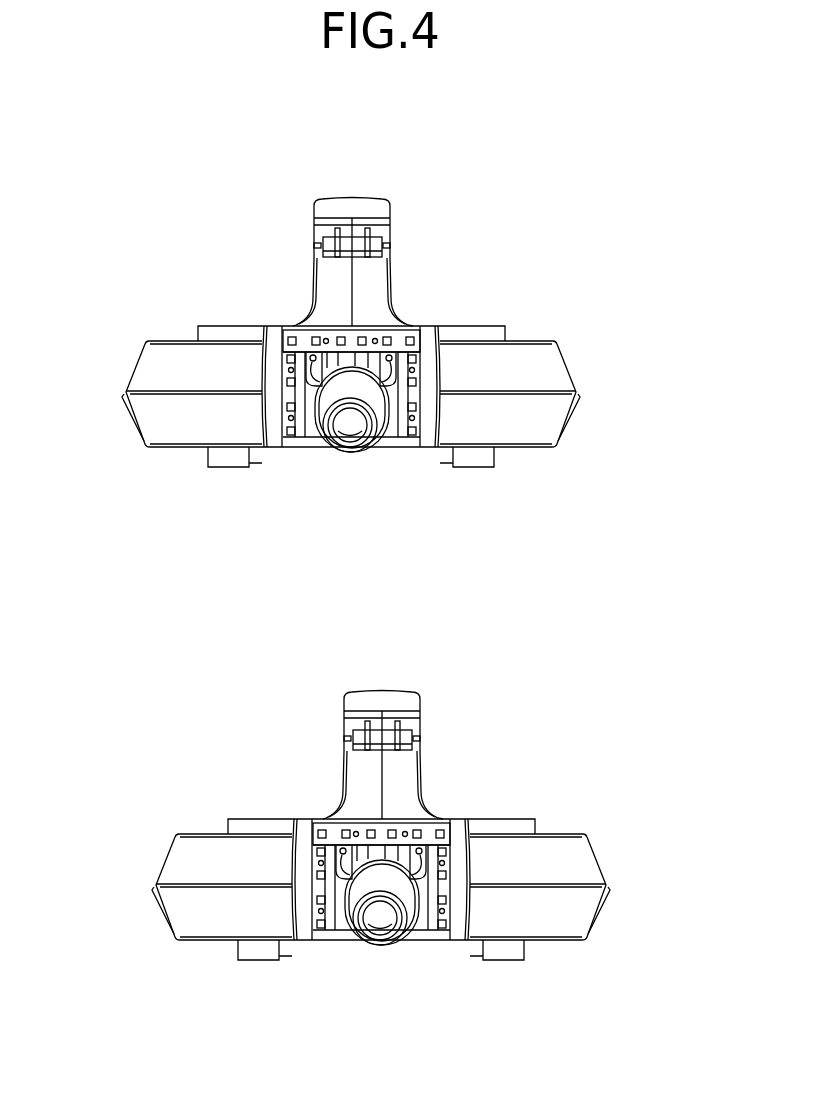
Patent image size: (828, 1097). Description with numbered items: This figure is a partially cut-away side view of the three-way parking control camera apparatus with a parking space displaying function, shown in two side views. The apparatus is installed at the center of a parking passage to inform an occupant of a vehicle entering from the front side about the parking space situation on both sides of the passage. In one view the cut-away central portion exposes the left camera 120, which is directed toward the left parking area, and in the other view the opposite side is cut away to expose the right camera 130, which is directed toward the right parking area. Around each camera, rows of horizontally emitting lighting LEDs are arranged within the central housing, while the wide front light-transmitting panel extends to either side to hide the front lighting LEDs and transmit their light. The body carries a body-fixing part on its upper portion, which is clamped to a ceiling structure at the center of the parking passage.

The left camera 120 is at (352, 450).
The right camera 130 is at (380, 952).